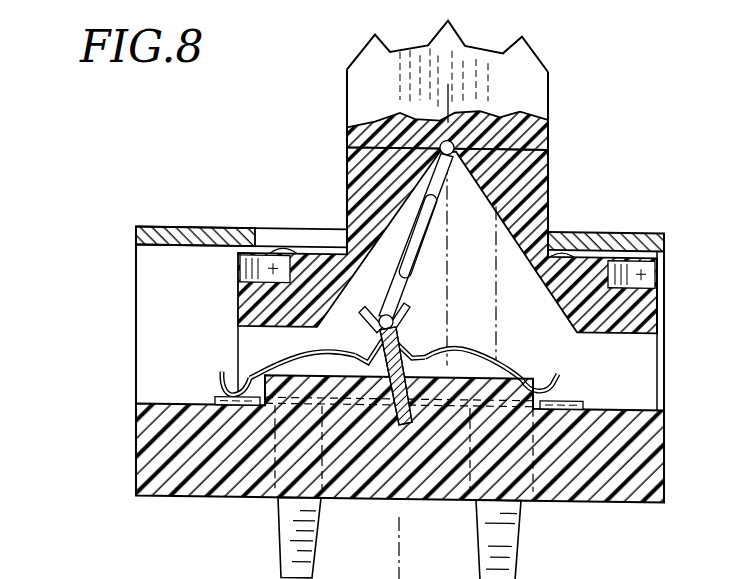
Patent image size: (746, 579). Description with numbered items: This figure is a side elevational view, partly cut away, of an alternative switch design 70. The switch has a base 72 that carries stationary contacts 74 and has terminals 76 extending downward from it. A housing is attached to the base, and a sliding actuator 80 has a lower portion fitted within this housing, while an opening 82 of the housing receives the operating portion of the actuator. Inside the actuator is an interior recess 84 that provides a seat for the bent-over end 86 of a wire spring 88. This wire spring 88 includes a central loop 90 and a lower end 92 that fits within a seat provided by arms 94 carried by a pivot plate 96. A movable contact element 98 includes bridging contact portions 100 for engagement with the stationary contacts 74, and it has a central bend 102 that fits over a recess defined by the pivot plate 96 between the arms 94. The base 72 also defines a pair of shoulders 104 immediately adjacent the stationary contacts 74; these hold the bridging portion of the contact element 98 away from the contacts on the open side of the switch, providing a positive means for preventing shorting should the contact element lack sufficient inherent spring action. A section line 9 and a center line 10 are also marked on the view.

The section line 9- 9 is at (445, 97).
The center line / axis 10 is at (510, 220).
The switch design 70 is at (110, 215).
The base 72 is at (190, 496).
The stationary contacts 74 is at (222, 399).
The terminals 76 is at (297, 546).
The sliding actuator 80 is at (652, 312).
The opening 82 is at (288, 240).
The interior recess 84 is at (548, 137).
The bent-over end 86 is at (347, 149).
The wire spring 88 is at (437, 215).
The central loop 90 is at (412, 240).
The lower end 92 is at (398, 318).
The arms 94 is at (378, 313).
The pivot plate 96 is at (393, 417).
The movable contact element 98 is at (390, 351).
The bridging contact portions 100 is at (221, 376).
The central bend 102 is at (418, 335).
The shoulders 104 is at (272, 374).